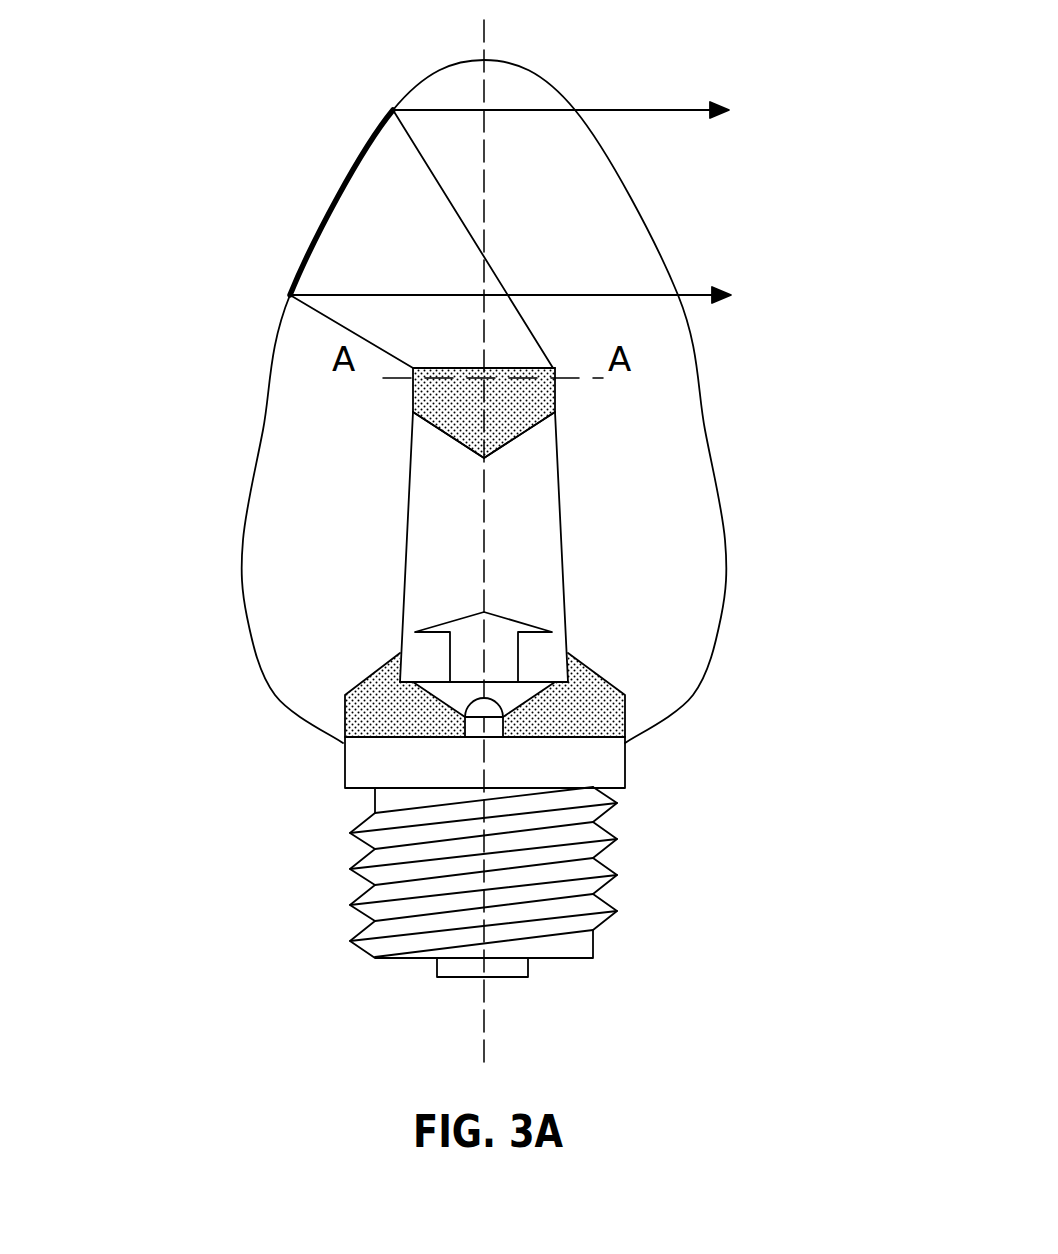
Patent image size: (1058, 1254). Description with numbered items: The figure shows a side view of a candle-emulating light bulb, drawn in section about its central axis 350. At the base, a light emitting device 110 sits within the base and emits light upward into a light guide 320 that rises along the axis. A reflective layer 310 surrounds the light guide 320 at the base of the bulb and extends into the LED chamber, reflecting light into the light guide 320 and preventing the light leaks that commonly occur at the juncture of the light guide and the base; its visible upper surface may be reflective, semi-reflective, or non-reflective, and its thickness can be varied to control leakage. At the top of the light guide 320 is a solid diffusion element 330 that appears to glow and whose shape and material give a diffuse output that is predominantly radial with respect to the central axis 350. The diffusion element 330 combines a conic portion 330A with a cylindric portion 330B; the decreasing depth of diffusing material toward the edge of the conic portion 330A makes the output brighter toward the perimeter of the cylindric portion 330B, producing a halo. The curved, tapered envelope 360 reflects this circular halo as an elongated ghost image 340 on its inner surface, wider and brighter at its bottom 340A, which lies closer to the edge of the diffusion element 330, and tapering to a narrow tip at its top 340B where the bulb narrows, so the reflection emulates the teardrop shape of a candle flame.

The light emitting device 110 is at (487, 703).
The reflective layer 310 is at (568, 697).
The light guide 320 is at (403, 562).
The diffusion element 330 is at (463, 418).
The conic portion 330A is at (508, 433).
The cylindric portion 330B is at (527, 393).
The ghost image 340 is at (332, 192).
The bottom of the ghost image 340A is at (291, 293).
The top of the ghost image 340B is at (393, 110).
The central axis 350 is at (485, 997).
The envelope 360 is at (266, 428).